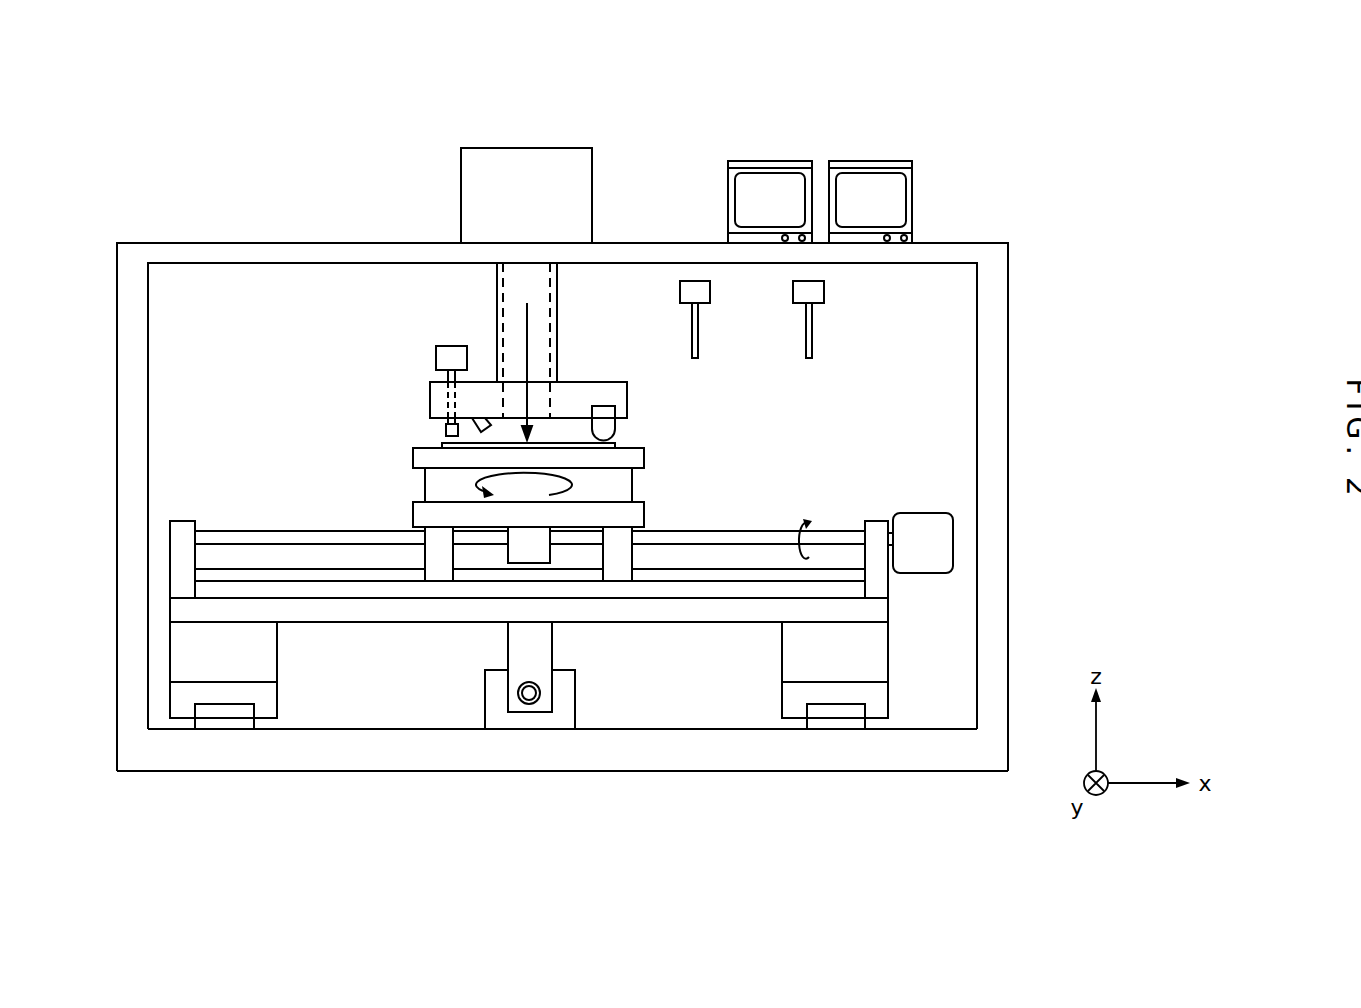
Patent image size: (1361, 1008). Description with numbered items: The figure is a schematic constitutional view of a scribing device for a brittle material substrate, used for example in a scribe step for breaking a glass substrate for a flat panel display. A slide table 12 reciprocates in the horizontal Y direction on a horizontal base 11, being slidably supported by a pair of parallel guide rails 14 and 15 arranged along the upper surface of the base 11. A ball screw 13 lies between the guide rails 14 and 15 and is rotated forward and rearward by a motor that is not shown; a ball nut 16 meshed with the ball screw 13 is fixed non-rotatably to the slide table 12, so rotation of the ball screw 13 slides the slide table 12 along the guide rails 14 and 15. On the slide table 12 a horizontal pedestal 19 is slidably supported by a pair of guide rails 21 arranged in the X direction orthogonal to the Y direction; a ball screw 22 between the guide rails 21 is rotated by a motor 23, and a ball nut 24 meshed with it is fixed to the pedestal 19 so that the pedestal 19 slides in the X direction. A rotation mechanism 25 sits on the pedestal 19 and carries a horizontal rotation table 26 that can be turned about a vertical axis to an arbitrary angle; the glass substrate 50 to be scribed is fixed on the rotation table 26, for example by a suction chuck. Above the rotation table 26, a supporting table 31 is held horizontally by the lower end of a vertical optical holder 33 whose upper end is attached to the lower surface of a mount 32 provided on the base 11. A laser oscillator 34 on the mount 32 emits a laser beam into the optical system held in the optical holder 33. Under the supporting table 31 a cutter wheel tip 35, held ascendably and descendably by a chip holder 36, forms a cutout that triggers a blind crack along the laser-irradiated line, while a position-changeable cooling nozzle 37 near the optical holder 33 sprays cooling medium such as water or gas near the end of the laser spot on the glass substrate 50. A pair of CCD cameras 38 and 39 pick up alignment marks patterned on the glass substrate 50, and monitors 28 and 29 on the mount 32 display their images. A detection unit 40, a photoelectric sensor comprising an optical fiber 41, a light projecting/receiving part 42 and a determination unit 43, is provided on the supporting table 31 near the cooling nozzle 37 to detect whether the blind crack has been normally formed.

The base 11 is at (707, 757).
The slide table 12 is at (888, 612).
The ball screw 13 is at (529, 706).
The guide rail 14 is at (227, 720).
The guide rail 15 is at (833, 720).
The ball nut 16 is at (505, 635).
The pedestal 19 is at (644, 516).
The guide rails 21 is at (220, 573).
The ball screw 22 is at (215, 530).
The motor 23 is at (953, 540).
The ball nut 24 is at (542, 548).
The rotation mechanism 25 is at (425, 484).
The rotation table 26 is at (647, 456).
The monitor 28 is at (763, 161).
The monitor 29 is at (880, 161).
The supporting table 31 is at (624, 382).
The mount 32 is at (297, 243).
The optical holder 33 is at (558, 283).
The laser oscillator 34 is at (558, 148).
The cutter wheel tip 35 is at (616, 433).
The chip holder 36 is at (605, 407).
The cooling nozzle 37 is at (483, 417).
The CCD camera 38 is at (698, 325).
The CCD camera 39 is at (812, 325).
The detection unit 40 is at (430, 328).
The optical fiber 41 is at (447, 380).
The light projecting/receiving part 42 is at (445, 430).
The determination unit 43 is at (436, 355).
The glass substrate 50 is at (441, 445).